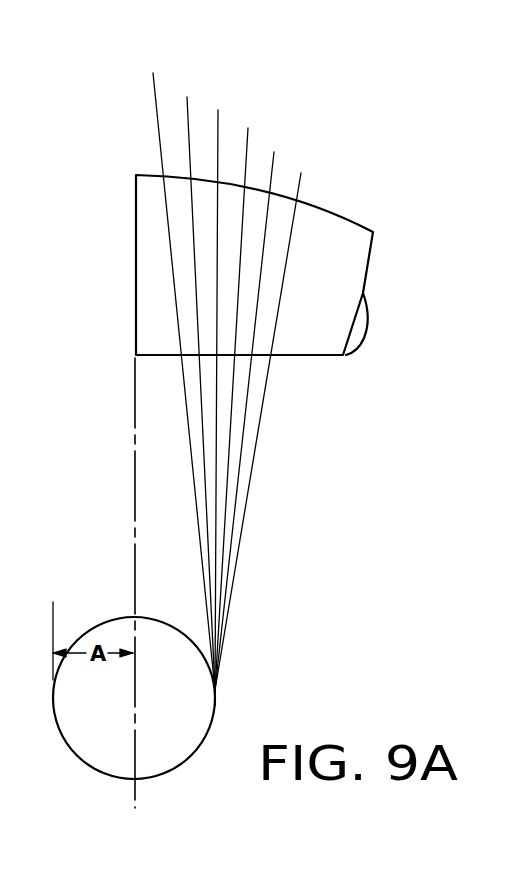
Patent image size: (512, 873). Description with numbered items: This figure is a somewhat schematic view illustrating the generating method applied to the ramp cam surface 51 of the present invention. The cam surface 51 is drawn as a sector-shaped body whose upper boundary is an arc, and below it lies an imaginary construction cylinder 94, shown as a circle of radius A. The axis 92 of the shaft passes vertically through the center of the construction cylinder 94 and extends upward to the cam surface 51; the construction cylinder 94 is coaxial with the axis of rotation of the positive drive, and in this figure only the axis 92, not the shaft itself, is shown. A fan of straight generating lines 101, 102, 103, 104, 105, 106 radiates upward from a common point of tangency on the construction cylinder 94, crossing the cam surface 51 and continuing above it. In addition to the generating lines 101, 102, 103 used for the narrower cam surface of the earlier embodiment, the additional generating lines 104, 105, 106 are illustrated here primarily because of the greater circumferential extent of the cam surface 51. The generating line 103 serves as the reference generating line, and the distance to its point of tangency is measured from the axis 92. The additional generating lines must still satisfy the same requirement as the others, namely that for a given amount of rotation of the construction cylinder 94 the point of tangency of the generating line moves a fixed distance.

The cam surface 51 is at (147, 282).
The axis 92 is at (132, 513).
The construction cylinder 94 is at (163, 619).
The generating line 101 is at (156, 93).
The generating line 102 is at (190, 122).
The generating line 103 is at (219, 140).
The generating line 104 is at (248, 157).
The generating line 105 is at (274, 180).
The generating line 106 is at (300, 197).